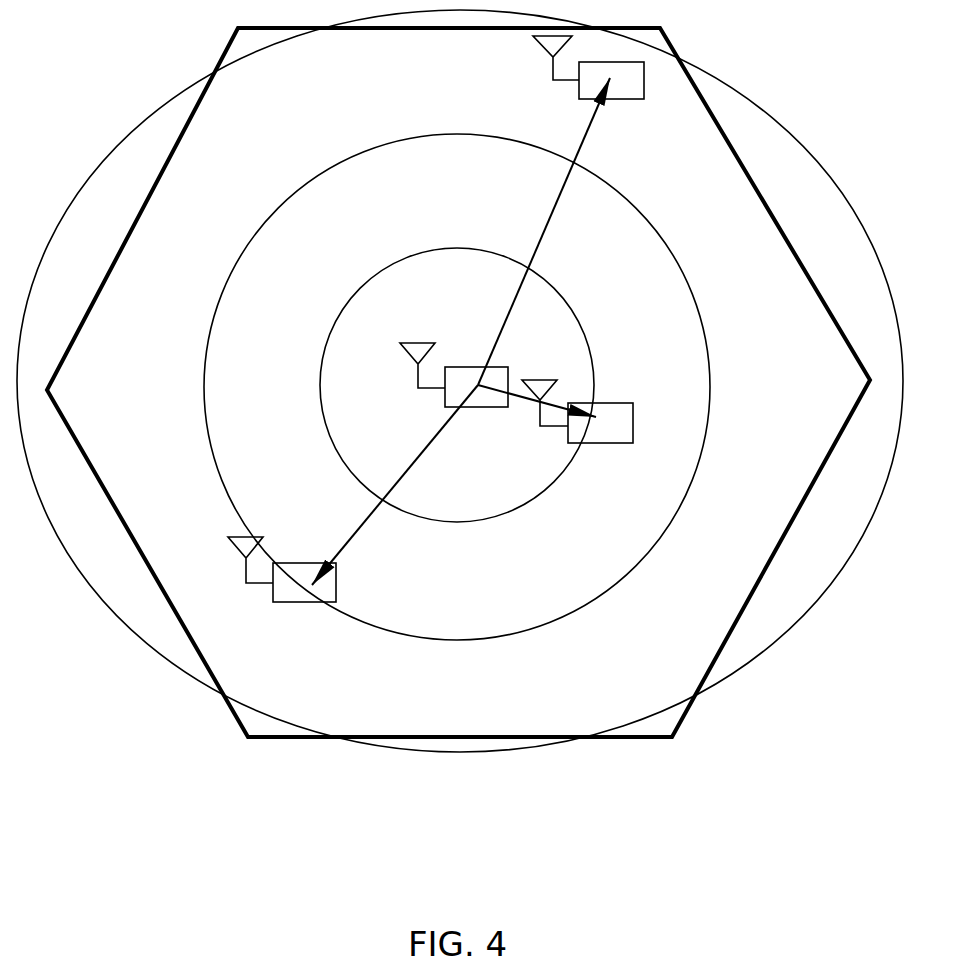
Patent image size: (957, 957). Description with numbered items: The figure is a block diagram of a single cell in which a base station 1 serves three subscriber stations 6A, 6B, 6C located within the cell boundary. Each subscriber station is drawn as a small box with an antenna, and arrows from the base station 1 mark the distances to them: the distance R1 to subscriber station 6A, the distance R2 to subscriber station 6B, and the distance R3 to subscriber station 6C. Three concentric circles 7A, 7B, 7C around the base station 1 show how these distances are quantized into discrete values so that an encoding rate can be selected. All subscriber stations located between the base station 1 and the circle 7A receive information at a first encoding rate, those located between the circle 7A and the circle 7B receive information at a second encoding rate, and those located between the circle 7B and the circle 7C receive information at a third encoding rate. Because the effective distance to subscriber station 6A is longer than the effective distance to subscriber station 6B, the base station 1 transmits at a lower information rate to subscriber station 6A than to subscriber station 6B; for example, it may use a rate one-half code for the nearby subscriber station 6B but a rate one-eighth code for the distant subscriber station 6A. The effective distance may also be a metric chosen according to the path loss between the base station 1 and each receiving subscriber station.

The base station 1 is at (500, 367).
The subscriber station 6A is at (644, 72).
The subscriber station 6B is at (614, 403).
The subscriber station 6C is at (336, 578).
The circle 7A is at (368, 282).
The circle 7B is at (277, 207).
The circle 7C is at (152, 113).
The distance R1 is at (544, 231).
The distance R2 is at (537, 415).
The distance R3 is at (395, 485).